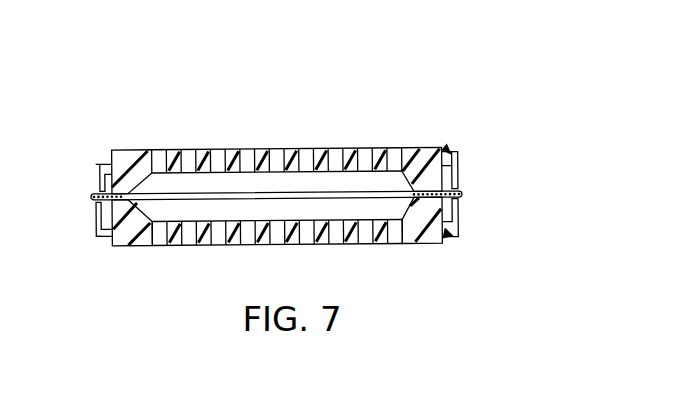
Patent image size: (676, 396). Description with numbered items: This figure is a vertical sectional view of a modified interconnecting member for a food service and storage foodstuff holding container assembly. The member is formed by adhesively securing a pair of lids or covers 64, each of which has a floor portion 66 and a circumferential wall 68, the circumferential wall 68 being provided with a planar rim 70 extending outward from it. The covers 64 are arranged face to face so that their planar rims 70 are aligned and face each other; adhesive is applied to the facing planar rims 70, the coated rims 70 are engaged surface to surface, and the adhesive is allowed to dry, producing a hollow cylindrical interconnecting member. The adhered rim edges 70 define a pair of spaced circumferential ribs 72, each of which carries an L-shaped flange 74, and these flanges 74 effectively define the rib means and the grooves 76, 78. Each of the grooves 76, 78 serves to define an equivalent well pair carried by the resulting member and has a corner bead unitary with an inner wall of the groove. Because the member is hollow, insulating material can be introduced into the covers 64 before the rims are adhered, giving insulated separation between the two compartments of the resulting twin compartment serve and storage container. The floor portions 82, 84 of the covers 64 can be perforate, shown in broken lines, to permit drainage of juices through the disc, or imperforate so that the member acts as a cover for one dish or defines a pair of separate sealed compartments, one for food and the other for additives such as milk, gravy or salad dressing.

The lids or covers 64 is at (200, 148).
The floor portion 66 is at (300, 148).
The circumferential wall 68 is at (458, 155).
The planar rim 70 is at (96, 190).
The circumferential ribs 72 is at (450, 153).
The L-shaped flange 74 is at (95, 168).
The groove 76 is at (108, 163).
The groove 78 is at (106, 233).
The floor portion 82 is at (233, 244).
The floor portion 84 is at (232, 148).